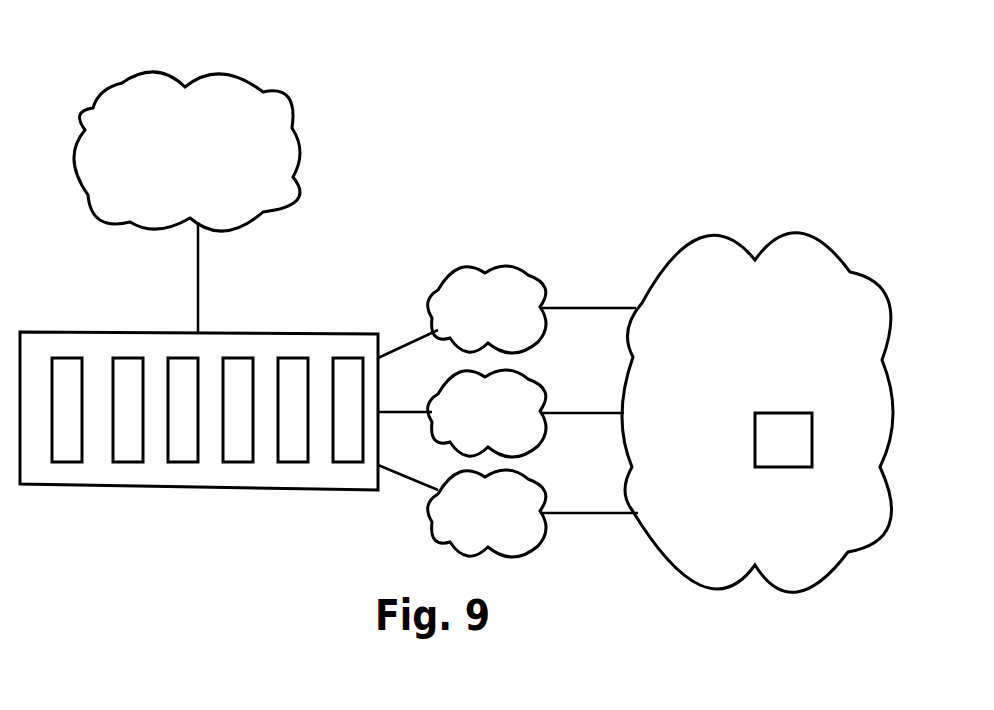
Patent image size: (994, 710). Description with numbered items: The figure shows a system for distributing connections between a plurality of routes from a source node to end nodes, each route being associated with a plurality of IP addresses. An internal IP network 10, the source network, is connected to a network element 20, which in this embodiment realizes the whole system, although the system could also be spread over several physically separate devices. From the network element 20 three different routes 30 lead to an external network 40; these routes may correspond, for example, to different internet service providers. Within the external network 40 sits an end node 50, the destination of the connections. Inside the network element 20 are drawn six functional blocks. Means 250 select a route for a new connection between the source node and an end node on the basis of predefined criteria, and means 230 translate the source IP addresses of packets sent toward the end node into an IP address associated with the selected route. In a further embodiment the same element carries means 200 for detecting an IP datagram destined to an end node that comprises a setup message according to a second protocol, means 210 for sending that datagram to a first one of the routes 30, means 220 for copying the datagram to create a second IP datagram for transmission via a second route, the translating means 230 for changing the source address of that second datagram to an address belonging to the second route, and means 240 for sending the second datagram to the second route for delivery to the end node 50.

The internal IP network 10 is at (233, 76).
The network element 20 is at (322, 333).
The routes 30 is at (529, 273).
The external network 40 is at (730, 233).
The end node 50 is at (782, 413).
The means for detecting an IP datagram 200 is at (70, 462).
The means for sending IP datagram to first route 210 is at (131, 462).
The means for copying IP datagram 220 is at (186, 462).
The means for translating source IP address 230 is at (241, 462).
The means for sending second IP datagram to second route 240 is at (296, 462).
The means for selecting a route 250 is at (351, 462).